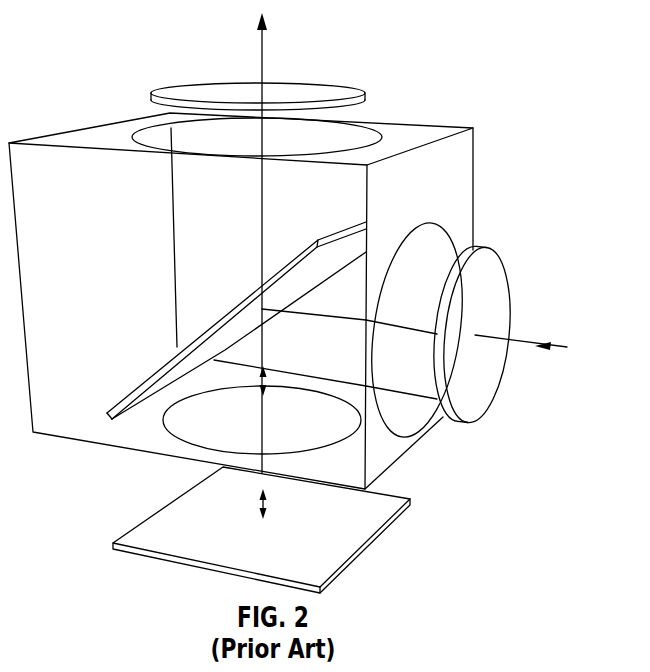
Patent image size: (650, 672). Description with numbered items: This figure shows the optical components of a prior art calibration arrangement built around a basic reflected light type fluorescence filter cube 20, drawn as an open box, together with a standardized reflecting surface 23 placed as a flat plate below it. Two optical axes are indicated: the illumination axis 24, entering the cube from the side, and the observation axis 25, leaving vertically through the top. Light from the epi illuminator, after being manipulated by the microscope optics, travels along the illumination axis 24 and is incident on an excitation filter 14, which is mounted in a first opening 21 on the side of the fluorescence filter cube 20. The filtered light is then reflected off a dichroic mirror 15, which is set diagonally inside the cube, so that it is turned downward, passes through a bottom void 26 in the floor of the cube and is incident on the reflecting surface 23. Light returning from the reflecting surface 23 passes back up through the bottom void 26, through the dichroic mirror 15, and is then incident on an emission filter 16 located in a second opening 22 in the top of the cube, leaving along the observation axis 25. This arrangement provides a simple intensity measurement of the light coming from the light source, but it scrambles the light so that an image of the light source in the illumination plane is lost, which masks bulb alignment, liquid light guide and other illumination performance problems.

The excitation filter 14 is at (484, 247).
The dichroic mirror 15 is at (174, 357).
The emission filter 16 is at (186, 83).
The fluorescence filter cube 20 is at (500, 97).
The first opening 21 is at (444, 222).
The second opening 22 is at (378, 134).
The reflecting surface 23 is at (393, 500).
The illumination axis 24 is at (551, 347).
The observation axis 25 is at (262, 53).
The bottom void 26 is at (158, 419).